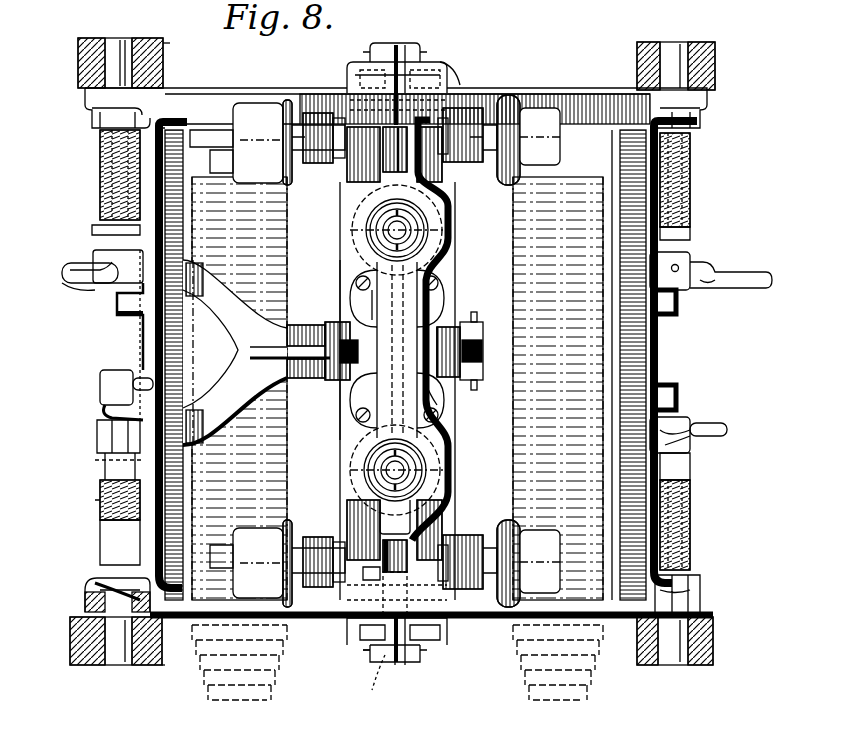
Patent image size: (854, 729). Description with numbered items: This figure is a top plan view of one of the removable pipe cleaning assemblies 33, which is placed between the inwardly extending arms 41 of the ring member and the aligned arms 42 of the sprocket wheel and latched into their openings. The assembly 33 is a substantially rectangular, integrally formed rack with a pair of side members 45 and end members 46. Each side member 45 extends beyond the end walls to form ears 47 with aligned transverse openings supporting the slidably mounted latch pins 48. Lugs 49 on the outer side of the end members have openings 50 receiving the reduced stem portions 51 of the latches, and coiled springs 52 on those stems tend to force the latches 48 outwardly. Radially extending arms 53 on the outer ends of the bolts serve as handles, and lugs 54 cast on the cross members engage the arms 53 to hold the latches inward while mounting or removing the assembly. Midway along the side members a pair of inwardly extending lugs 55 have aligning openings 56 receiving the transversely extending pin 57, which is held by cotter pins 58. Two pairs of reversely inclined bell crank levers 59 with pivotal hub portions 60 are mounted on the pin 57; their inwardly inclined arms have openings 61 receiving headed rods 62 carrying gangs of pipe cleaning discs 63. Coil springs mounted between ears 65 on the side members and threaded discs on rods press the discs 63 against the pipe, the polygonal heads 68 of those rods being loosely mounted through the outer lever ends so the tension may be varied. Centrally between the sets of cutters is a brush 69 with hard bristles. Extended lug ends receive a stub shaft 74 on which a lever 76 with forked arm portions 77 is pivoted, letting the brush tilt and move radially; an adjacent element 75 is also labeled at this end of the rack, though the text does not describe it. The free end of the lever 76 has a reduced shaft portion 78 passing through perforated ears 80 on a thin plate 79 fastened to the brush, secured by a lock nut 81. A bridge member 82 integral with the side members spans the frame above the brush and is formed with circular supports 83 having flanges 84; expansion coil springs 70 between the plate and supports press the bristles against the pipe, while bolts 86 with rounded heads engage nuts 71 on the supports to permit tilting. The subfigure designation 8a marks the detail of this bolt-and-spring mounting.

The pipe cleaning assembly 33 is at (488, 72).
The inwardly extending arm 41 is at (162, 665).
The inwardly extending arm 42 is at (165, 43).
The side member 45 is at (190, 97).
The end member 46 is at (150, 340).
The ear 47 is at (85, 100).
The latch pin 48 is at (105, 62).
The lug 49 is at (705, 240).
The opening 50 is at (95, 462).
The reduced stem portion 51 is at (115, 180).
The coiled spring 52 is at (700, 170).
The radially extending arm 53 is at (100, 268).
The lug 54 is at (117, 305).
The inwardly extending lug 55 is at (428, 75).
The aligning opening 56 is at (380, 679).
The transversely extending pin 57 is at (370, 577).
The cotter pin 58 is at (364, 657).
The bell crank lever 59 is at (292, 172).
The pivotal hub portion 60 is at (428, 578).
The opening 61 is at (222, 135).
The headed rod 62 is at (268, 700).
The pipe cleaning disc 63 is at (507, 497).
The ear 65 is at (292, 540).
The polygonal head 68 is at (342, 120).
The brush 69 is at (330, 410).
The expansion coil spring 70 is at (437, 247).
The nut 71 is at (420, 230).
The stub shaft 74 is at (100, 413).
The washer 75 is at (95, 232).
The lever 76 is at (292, 325).
The forked arm portion 77 is at (140, 290).
The reduced shaft portion 78 is at (435, 340).
The thin plate 79 is at (437, 388).
The ear 80 is at (345, 380).
The lock nut 81 is at (470, 380).
The bridge member 82 is at (385, 300).
The circular support 83 is at (385, 222).
The flange 84 is at (355, 238).
The bolt 86 is at (390, 240).
The pivot axis 8a is at (355, 470).